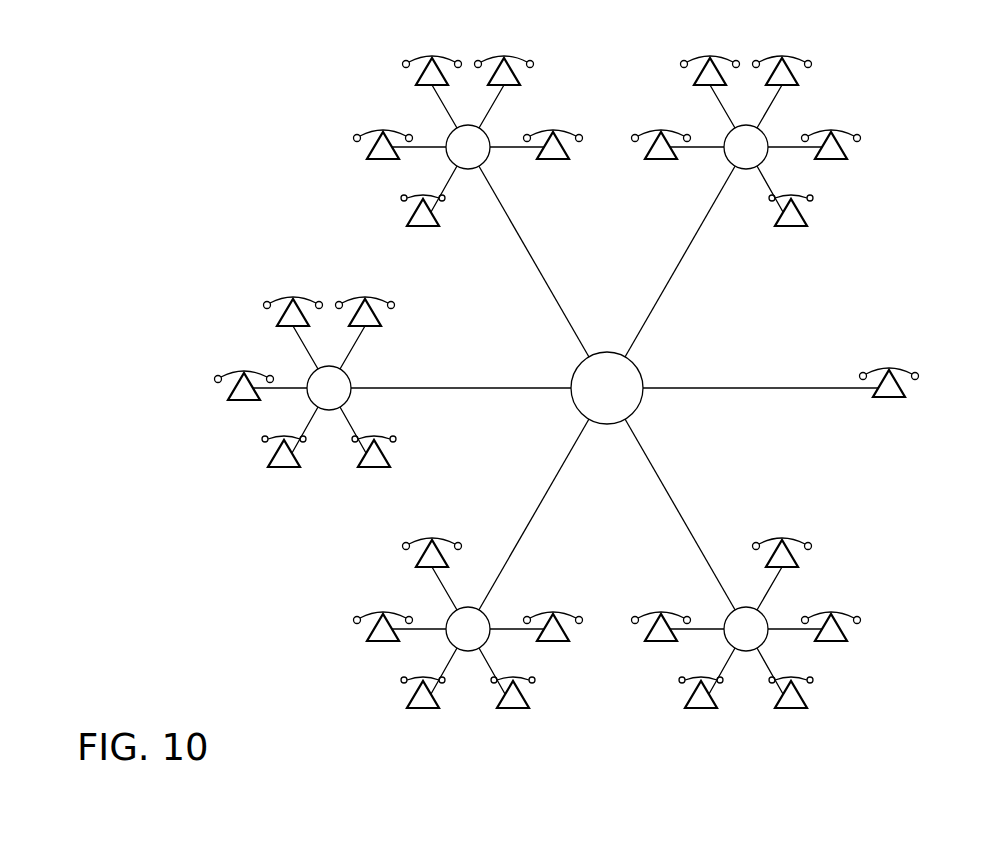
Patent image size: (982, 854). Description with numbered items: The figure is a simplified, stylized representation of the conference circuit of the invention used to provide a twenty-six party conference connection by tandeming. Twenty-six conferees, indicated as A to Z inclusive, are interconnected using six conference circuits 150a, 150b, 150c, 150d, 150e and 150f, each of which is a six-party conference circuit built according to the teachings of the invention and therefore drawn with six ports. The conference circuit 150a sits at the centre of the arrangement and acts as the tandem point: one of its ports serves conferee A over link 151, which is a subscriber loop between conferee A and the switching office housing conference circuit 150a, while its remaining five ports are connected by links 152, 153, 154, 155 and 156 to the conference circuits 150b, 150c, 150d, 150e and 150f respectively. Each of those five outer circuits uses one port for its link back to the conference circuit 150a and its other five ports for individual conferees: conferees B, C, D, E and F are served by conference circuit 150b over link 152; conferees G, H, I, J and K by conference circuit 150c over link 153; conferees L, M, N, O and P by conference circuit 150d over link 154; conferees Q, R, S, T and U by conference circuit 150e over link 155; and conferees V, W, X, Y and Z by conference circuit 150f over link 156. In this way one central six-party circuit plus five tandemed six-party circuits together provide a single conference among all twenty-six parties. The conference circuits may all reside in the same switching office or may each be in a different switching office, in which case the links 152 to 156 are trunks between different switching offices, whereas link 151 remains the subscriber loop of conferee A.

The conference circuit 150a is at (588, 399).
The conference circuit 150b is at (731, 156).
The conference circuit 150c is at (453, 156).
The conference circuit 150d is at (314, 397).
The conference circuit 150e is at (453, 638).
The conference circuit 150f is at (731, 638).
The link 151 is at (772, 386).
The link 152 is at (688, 251).
The link 153 is at (528, 255).
The link 154 is at (507, 387).
The link 155 is at (548, 490).
The link 156 is at (669, 490).
The conferee A is at (901, 388).
The conferee B is at (804, 220).
The conferee C is at (844, 153).
The conferee D is at (795, 79).
The conferee E is at (697, 79).
The conferee F is at (648, 153).
The conferee G is at (566, 153).
The conferee H is at (517, 79).
The conferee I is at (419, 79).
The conferee J is at (370, 153).
The conferee K is at (410, 220).
The conferee L is at (378, 320).
The conferee M is at (280, 320).
The conferee N is at (231, 394).
The conferee O is at (271, 461).
The conferee P is at (387, 461).
The conferee Q is at (419, 561).
The conferee R is at (370, 635).
The conferee S is at (410, 702).
The conferee T is at (526, 702).
The conferee U is at (566, 635).
The conferee V is at (648, 635).
The conferee W is at (688, 702).
The conferee X is at (804, 702).
The conferee Y is at (844, 635).
The conferee Z is at (795, 561).